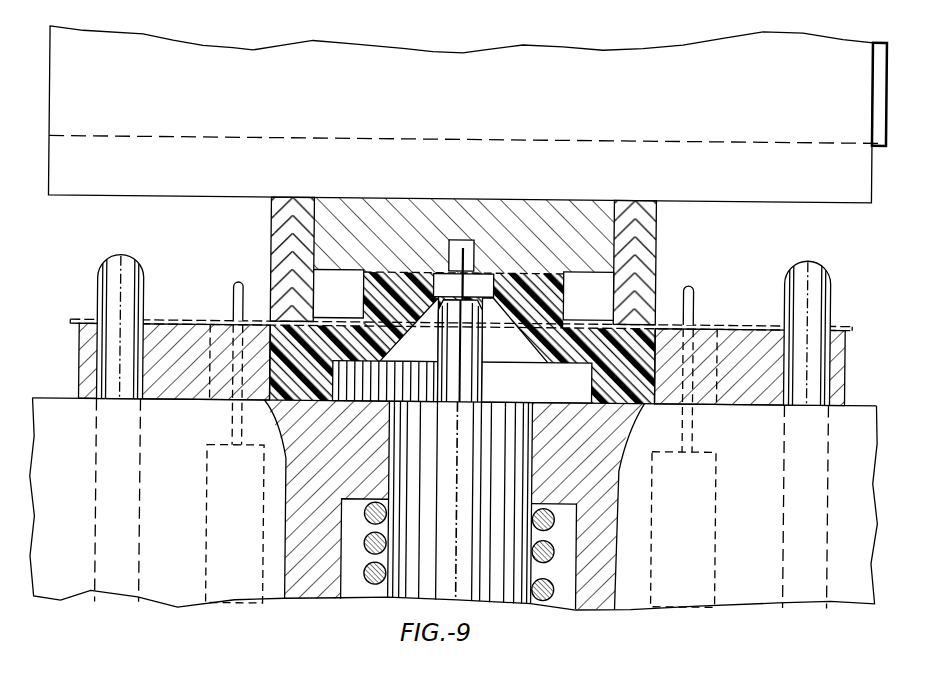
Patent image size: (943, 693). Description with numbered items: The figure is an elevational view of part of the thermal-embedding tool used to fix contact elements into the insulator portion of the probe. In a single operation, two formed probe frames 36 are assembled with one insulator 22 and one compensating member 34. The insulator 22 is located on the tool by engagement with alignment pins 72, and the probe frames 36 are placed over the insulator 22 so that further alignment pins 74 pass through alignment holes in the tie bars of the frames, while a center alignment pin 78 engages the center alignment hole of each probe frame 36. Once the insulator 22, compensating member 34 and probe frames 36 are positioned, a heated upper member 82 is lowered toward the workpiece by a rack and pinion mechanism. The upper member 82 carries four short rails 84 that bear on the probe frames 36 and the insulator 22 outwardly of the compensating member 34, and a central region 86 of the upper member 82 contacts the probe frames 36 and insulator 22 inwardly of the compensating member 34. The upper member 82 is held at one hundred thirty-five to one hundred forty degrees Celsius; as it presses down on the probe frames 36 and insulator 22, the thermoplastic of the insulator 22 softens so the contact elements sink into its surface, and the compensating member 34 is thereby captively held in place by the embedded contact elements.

The insulator 22 is at (638, 395).
The compensating member 34 is at (339, 318).
The probe frame 36 is at (199, 323).
The alignment pin 72 is at (98, 273).
The alignment pin 74 is at (233, 292).
The center alignment pin 78 is at (464, 250).
The heated upper member 82 is at (270, 247).
The short rail 84 is at (656, 297).
The central region 86 is at (581, 273).